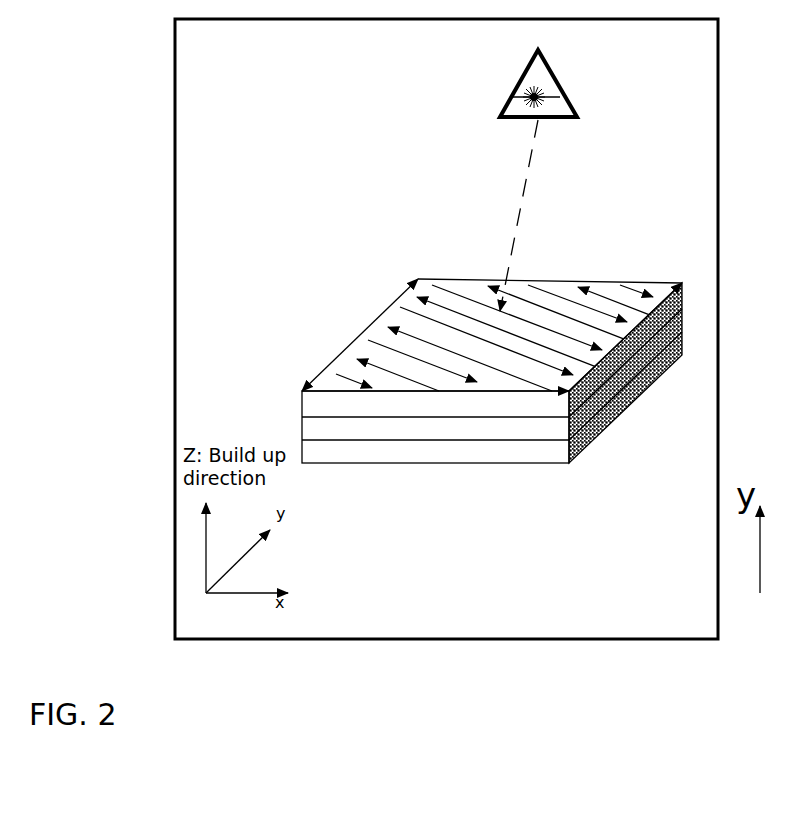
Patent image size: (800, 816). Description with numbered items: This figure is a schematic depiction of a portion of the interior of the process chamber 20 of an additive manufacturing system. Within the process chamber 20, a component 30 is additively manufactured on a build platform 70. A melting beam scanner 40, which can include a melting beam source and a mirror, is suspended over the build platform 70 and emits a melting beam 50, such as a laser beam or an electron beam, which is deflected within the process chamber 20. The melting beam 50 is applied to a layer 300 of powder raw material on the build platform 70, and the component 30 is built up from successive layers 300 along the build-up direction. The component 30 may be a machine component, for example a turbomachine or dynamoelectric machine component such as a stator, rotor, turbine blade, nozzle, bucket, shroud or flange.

The process chamber 20 is at (246, 100).
The component 30 is at (411, 217).
The melting beam scanner 40 is at (512, 97).
The melting beam 50 is at (538, 215).
The build platform 70 is at (663, 452).
The layer 300 is at (506, 417).